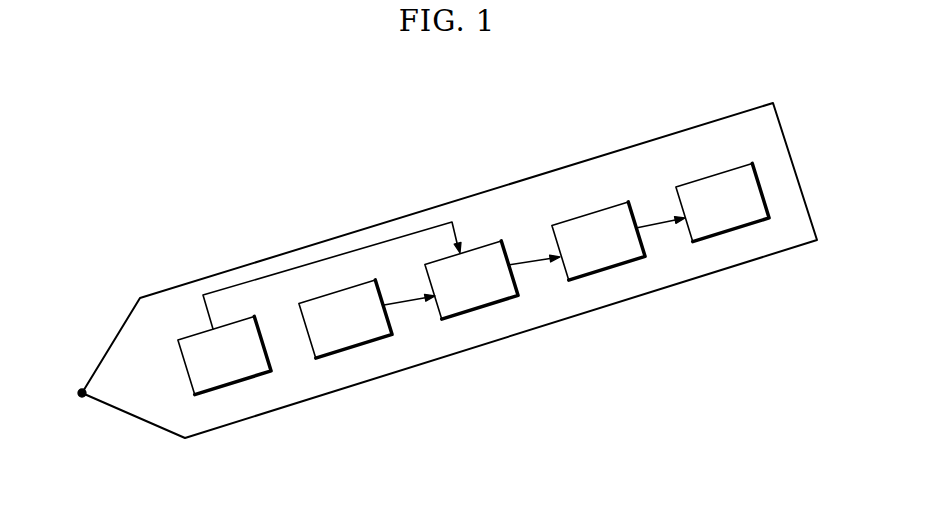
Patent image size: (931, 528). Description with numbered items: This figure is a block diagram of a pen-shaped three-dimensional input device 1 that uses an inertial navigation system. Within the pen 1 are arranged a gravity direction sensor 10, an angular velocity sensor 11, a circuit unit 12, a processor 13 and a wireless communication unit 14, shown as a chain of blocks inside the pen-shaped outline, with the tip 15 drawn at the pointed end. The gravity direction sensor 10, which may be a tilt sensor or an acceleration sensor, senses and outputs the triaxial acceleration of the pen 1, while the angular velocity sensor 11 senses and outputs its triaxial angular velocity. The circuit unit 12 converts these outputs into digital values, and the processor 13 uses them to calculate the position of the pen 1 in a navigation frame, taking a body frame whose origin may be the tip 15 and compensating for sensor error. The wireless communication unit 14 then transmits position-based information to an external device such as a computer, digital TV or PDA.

The gravity direction sensor 10 is at (232, 385).
The angular velocity sensor 11 is at (357, 346).
The circuit unit 12 is at (480, 311).
The processor 13 is at (608, 272).
The wireless communication unit 14 is at (728, 234).
The tip 15 is at (82, 393).
The 3D input device (pen) 1 is at (773, 103).